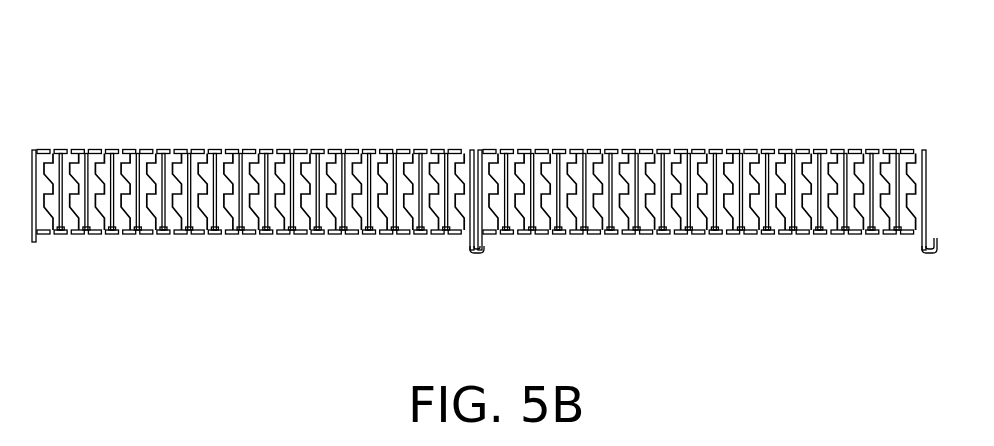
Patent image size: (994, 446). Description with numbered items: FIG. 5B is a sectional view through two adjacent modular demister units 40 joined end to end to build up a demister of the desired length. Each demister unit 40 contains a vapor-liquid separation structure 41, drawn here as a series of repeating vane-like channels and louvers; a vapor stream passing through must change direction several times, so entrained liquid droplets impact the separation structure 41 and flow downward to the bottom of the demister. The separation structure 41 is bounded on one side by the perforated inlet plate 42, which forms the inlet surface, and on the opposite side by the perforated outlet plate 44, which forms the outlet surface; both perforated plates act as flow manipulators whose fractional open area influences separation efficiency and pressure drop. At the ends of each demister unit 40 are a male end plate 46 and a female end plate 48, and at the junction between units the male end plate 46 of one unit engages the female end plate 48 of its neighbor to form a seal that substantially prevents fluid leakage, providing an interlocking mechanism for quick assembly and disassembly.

The demister unit 40 is at (254, 94).
The vapor-liquid separation structure 41 is at (204, 160).
The perforated inlet plate 42 is at (288, 234).
The perforated outlet plate 44 is at (320, 149).
The male end plate 46 is at (36, 242).
The female end plate 48 is at (481, 253).